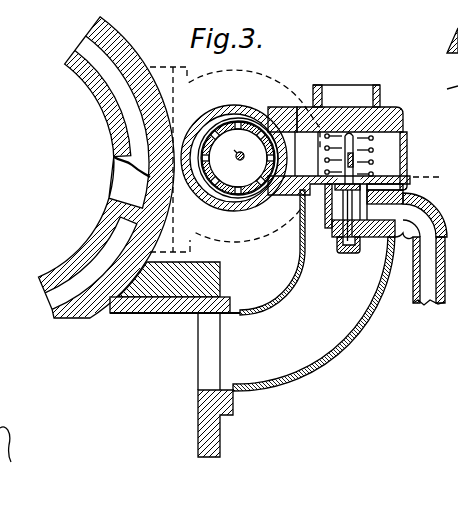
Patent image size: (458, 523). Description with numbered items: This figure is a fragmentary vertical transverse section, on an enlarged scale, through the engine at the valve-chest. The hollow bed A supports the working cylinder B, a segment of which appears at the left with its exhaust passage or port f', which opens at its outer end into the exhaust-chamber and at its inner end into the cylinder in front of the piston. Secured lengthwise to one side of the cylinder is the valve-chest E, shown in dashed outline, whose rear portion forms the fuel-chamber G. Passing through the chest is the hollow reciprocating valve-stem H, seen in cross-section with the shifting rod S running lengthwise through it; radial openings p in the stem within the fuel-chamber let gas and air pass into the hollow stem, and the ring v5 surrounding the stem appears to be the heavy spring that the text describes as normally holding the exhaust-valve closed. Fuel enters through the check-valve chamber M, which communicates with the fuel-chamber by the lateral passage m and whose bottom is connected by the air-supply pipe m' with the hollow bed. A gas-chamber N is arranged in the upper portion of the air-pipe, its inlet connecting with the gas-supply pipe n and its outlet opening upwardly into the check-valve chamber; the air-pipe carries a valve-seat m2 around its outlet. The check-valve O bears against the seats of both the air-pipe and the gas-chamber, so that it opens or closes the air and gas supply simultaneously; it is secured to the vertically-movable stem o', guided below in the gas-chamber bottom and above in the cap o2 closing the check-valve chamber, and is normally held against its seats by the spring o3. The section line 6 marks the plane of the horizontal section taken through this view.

The working cylinder B is at (73, 97).
The valve-chest E is at (175, 100).
The bearing race ring v5 is at (229, 117).
The radial openings p is at (258, 136).
The shifting rod S is at (232, 154).
The hollow reciprocating valve-stem H is at (251, 181).
The lateral passage m is at (295, 158).
The exhaust passage or port f' is at (113, 175).
The fuel-chamber G is at (171, 243).
The section line 6- 6 is at (248, 226).
The valve-seat of the air-supply pipe m2 is at (298, 212).
The gas-supply pipe n is at (333, 188).
The gas-chamber N is at (338, 230).
The vertically-movable stem o' is at (348, 256).
The cap o2 is at (346, 96).
The check-valve chamber M is at (398, 141).
The spring o3 is at (372, 160).
The check-valve O is at (392, 180).
The air-supply pipe m' is at (314, 314).
The hollow bed A is at (196, 449).